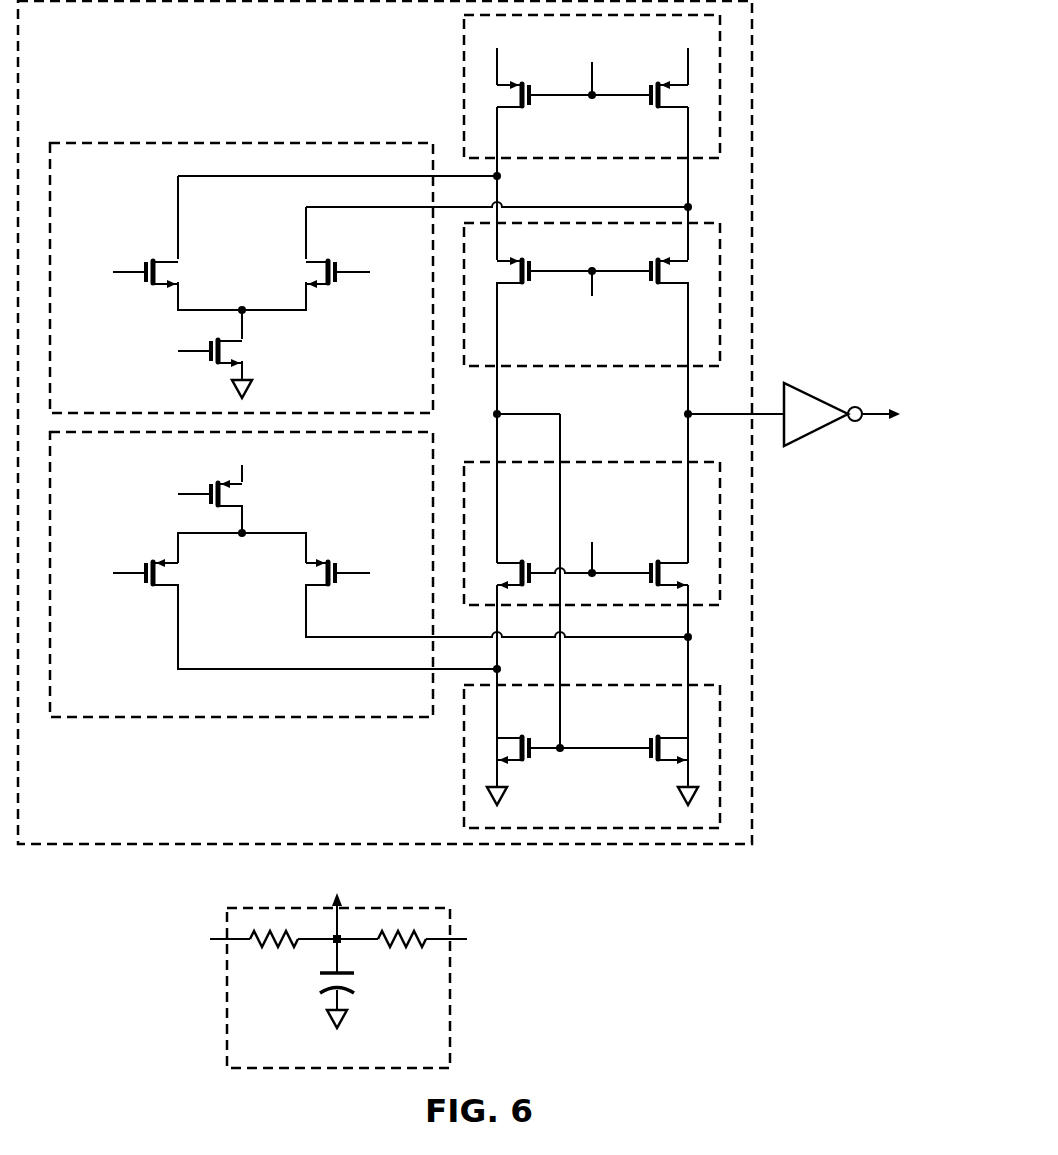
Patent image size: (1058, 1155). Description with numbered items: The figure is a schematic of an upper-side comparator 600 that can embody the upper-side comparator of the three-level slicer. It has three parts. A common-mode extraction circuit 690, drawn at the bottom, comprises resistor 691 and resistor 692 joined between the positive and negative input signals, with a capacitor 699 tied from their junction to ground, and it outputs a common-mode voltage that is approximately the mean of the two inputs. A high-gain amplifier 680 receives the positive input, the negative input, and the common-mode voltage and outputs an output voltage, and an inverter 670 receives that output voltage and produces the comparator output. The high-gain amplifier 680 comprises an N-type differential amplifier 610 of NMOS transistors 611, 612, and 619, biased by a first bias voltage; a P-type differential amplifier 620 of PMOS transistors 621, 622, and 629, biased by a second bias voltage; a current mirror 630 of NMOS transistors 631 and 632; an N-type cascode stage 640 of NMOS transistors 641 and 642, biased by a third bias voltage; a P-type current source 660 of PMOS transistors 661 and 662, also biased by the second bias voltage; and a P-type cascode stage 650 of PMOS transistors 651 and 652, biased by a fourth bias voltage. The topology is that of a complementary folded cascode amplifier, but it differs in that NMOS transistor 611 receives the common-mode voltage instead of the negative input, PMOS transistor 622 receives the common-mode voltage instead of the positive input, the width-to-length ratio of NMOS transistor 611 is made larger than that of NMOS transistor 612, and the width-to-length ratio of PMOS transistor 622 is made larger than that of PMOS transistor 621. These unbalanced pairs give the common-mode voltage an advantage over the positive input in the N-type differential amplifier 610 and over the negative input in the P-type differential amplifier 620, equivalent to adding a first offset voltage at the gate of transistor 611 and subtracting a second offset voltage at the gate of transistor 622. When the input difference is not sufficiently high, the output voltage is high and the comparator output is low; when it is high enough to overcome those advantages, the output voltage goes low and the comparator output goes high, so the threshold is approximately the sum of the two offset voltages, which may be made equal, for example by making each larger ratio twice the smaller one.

The upper-side comparator 600 is at (479, 539).
The N-type differential amplifier 610 is at (241, 259).
The NMOS transistor 611 is at (152, 292).
The NMOS transistor 612 is at (328, 292).
The NMOS transistor 619 is at (218, 371).
The P-type differential amplifier 620 is at (241, 594).
The PMOS transistor 621 is at (150, 560).
The PMOS transistor 622 is at (330, 560).
The PMOS transistor 629 is at (213, 482).
The current mirror 630 is at (566, 756).
The NMOS transistor 631 is at (522, 736).
The NMOS transistor 632 is at (658, 736).
The N-type cascode stage 640 is at (592, 516).
The NMOS transistor 641 is at (522, 561).
The NMOS transistor 642 is at (658, 561).
The P-type cascode stage 650 is at (592, 313).
The PMOS transistor 651 is at (522, 284).
The PMOS transistor 652 is at (658, 284).
The P-type current source 660 is at (566, 86).
The PMOS transistor 661 is at (522, 108).
The PMOS transistor 662 is at (658, 108).
The inverter 670 is at (820, 400).
The high-gain amplifier 680 is at (413, 422).
The common-mode extraction circuit 690 is at (341, 968).
The resistor 691 is at (276, 946).
The resistor 692 is at (404, 948).
The capacitor 699 is at (320, 990).